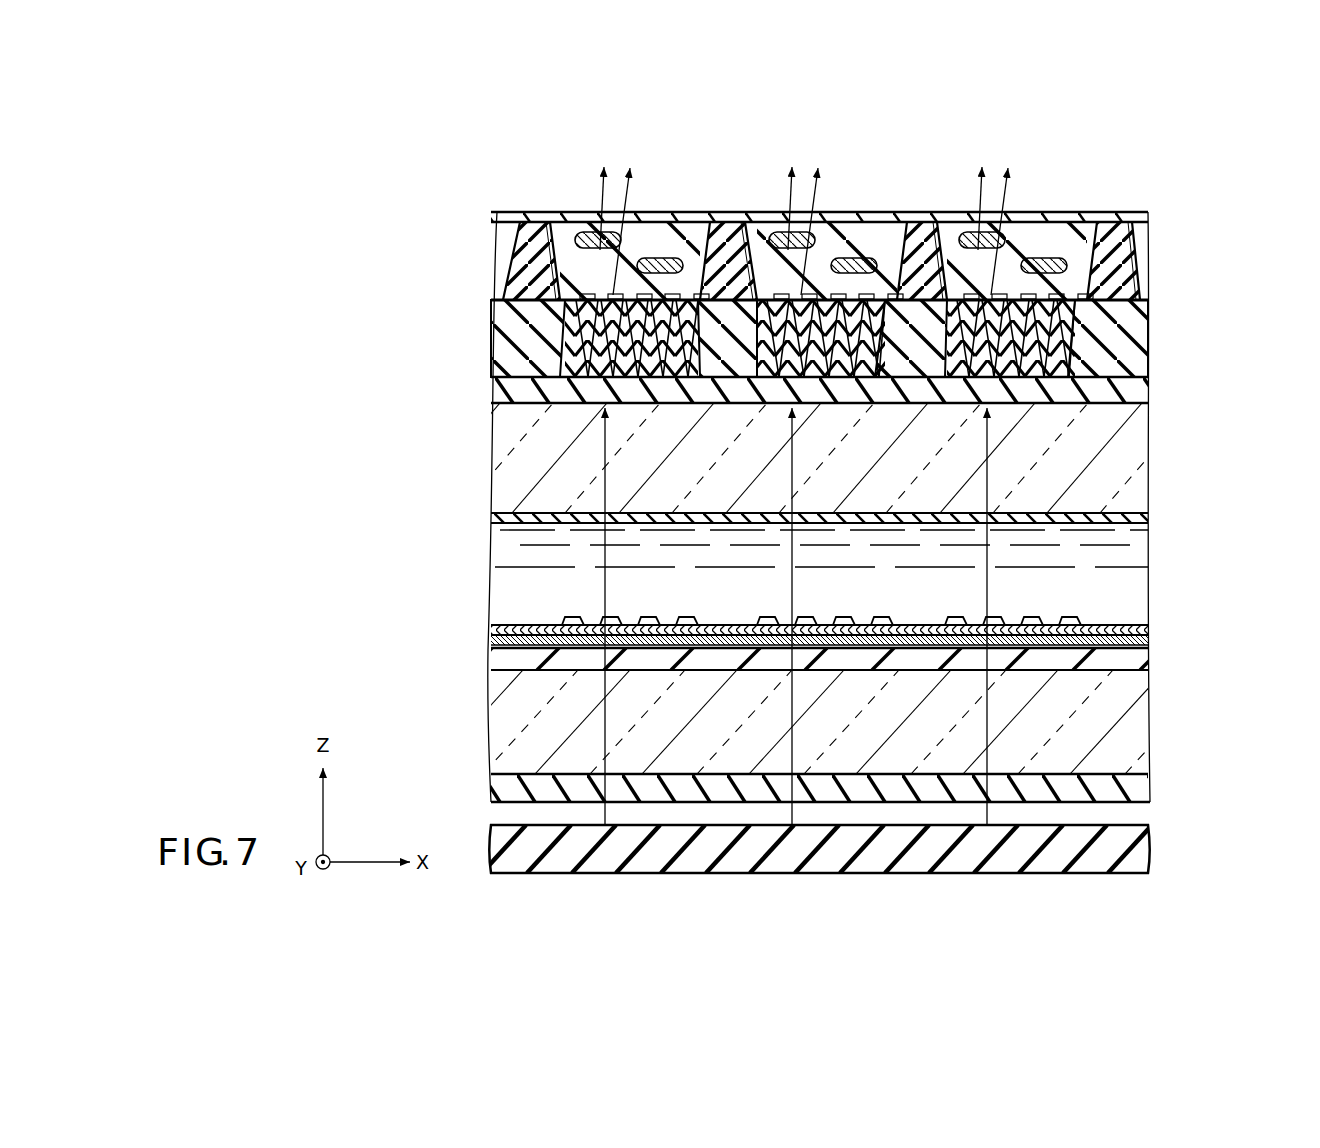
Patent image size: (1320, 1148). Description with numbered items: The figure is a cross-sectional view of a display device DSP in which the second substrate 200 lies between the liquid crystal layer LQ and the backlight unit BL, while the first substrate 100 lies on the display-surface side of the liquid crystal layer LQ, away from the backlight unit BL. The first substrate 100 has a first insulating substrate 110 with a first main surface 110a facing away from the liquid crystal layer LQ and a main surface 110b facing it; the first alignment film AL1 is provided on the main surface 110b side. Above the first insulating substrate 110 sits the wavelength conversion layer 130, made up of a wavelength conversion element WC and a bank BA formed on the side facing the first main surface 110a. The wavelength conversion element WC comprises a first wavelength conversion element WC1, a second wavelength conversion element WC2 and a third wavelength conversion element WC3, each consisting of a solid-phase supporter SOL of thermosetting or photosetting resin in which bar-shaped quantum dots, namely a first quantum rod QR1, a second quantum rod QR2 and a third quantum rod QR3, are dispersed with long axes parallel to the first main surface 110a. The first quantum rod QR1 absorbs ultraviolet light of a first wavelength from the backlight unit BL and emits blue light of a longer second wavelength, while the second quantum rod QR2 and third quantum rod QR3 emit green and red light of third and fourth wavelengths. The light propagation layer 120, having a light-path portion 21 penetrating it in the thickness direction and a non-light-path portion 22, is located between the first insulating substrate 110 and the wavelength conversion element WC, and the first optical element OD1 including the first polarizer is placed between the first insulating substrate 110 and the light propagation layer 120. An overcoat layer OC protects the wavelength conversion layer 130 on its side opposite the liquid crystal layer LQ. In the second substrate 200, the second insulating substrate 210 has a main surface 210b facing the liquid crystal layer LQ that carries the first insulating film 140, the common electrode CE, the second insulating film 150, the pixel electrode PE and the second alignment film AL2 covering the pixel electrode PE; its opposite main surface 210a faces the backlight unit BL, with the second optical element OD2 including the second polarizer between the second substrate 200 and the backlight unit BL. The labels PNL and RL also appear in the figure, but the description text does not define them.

The display device DSP is at (1185, 172).
The display panel PNL is at (410, 485).
The first substrate 100 is at (395, 397).
The first insulating substrate 110 is at (1140, 460).
The first main surface 110a is at (516, 392).
The main surface 110b is at (527, 519).
The light propagation layer 120 is at (420, 342).
The light-path portion 21 is at (600, 355).
The non-light-path portion 22 is at (1090, 345).
The wavelength conversion layer 130 is at (488, 263).
The bank BA is at (538, 222).
The reflective layer RL is at (615, 295).
The overcoat layer OC is at (1150, 216).
The wavelength conversion element WC is at (978, 128).
The first wavelength conversion element WC1 is at (565, 240).
The second wavelength conversion element WC2 is at (757, 240).
The third wavelength conversion element WC3 is at (947, 240).
The first quantum rod QR1 is at (652, 234).
The second quantum rod QR2 is at (842, 234).
The third quantum rod QR3 is at (1032, 234).
The solid-phase supporter SOL is at (700, 235).
The first optical element OD1 is at (1150, 390).
The first alignment film AL1 is at (1150, 518).
The liquid crystal layer LQ is at (472, 575).
The second substrate 200 is at (477, 722).
The second insulating substrate 210 is at (1140, 730).
The main surface 210a is at (535, 790).
The main surface 210b is at (510, 663).
The pixel electrode PE is at (582, 618).
The second alignment film AL2 is at (1140, 630).
The second insulating film 150 is at (1150, 640).
The common electrode CE is at (1150, 648).
The first insulating film 140 is at (1150, 665).
The second optical element OD2 is at (1152, 790).
The backlight unit BL is at (1150, 850).